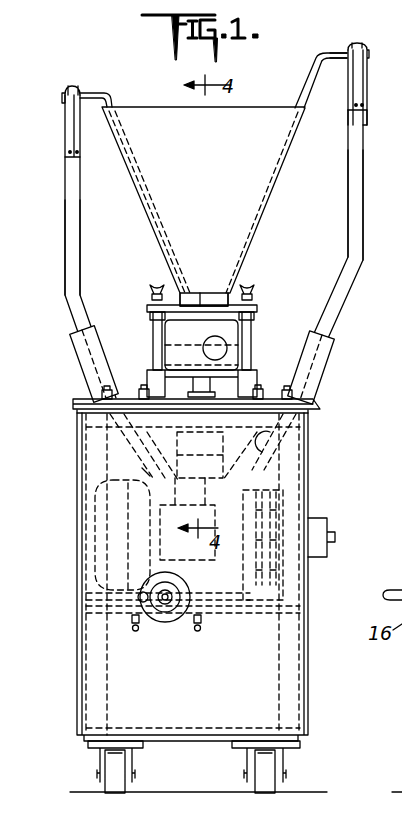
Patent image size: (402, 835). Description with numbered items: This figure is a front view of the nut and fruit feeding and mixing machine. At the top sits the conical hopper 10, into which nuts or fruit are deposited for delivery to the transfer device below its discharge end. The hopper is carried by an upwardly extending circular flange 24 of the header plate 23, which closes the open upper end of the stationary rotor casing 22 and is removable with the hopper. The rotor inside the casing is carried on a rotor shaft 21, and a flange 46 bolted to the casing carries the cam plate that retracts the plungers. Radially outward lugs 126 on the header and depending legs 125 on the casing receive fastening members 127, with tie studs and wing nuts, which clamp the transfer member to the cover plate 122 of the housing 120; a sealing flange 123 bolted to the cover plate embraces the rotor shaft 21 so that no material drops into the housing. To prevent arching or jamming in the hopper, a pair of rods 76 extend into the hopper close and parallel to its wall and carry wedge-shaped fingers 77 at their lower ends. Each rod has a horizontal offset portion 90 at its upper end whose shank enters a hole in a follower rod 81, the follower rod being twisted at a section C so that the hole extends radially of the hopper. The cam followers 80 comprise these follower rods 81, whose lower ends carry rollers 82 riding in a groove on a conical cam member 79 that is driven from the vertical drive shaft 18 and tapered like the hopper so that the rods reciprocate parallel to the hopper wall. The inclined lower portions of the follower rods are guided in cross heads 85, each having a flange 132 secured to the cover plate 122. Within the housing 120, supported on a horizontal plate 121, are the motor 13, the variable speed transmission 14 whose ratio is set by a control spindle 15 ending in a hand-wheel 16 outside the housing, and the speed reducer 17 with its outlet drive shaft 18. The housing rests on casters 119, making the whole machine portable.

The conical hopper 10 is at (244, 163).
The motor 13 is at (140, 593).
The variable speed transmission 14 is at (263, 507).
The adjusting or control spindle 15 is at (157, 620).
The operating hand-wheel 16 is at (176, 620).
The speed reducer 17 is at (155, 525).
The vertical outlet drive shaft 18 is at (196, 507).
The rotor shaft 21 is at (210, 384).
The rotor casing 22 is at (228, 332).
The header plate 23 is at (228, 306).
The circular flange 24 is at (166, 292).
The flange 46 is at (224, 351).
The rods 76 is at (104, 93).
The fingers 77 is at (198, 293).
The conical cam member 79 is at (250, 472).
The cam followers 80 is at (65, 285).
The follower rods 81 is at (65, 243).
The rollers 82 is at (143, 465).
The cross heads 85 is at (88, 352).
The offset portion 90 is at (331, 53).
The casters 119 is at (113, 793).
The housing 120 is at (270, 698).
The plate 121 is at (254, 612).
The cover plate 122 is at (318, 405).
The sealing flange 123 is at (160, 409).
The depending legs 125 is at (147, 385).
The lugs 126 is at (258, 307).
The fastening members 127 is at (153, 330).
The flange 132 is at (100, 397).
The section C is at (366, 132).